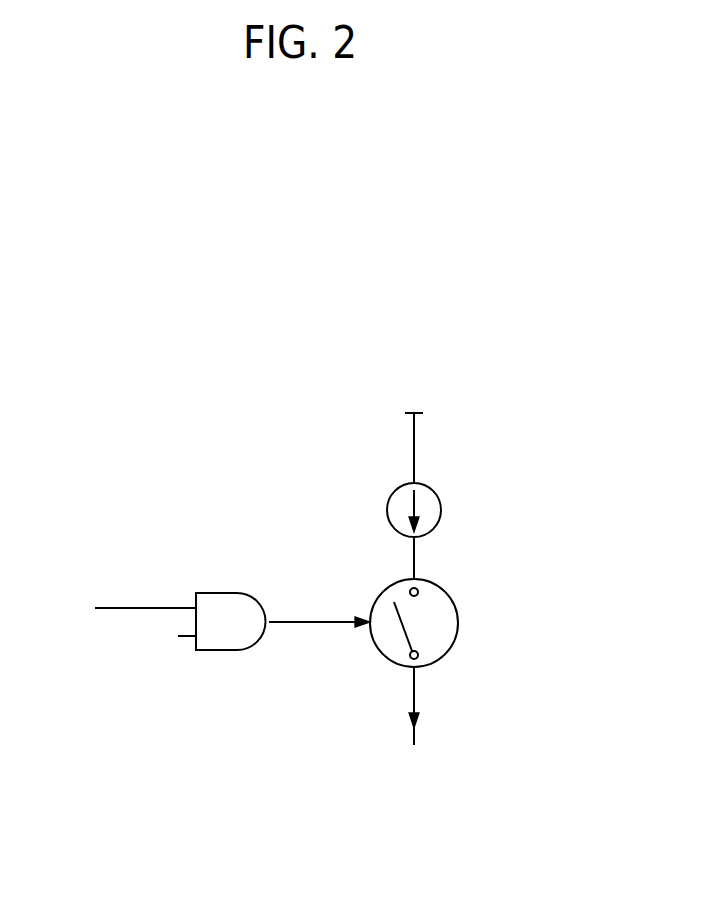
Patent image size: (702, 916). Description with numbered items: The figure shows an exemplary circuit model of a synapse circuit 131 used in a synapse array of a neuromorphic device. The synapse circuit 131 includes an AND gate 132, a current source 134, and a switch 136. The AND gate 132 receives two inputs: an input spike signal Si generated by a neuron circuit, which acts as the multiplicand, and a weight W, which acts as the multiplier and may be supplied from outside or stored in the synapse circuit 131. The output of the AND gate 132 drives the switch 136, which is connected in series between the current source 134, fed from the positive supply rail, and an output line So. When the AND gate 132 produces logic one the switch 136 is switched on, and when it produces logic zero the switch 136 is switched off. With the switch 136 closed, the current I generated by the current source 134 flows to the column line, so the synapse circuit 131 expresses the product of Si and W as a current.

The synapse circuit 131 is at (196, 474).
The AND gate 132 is at (228, 592).
The current source 134 is at (441, 513).
The switch 136 is at (458, 625).